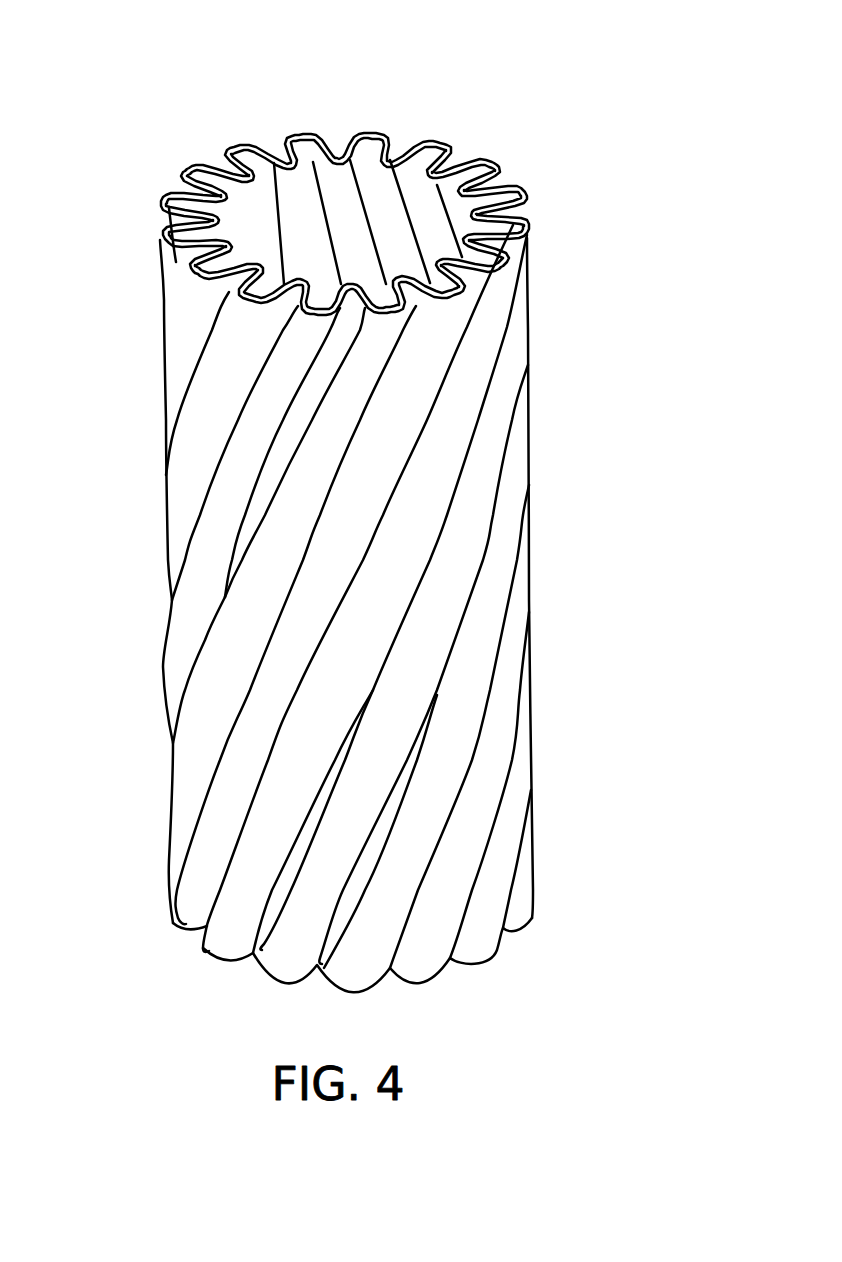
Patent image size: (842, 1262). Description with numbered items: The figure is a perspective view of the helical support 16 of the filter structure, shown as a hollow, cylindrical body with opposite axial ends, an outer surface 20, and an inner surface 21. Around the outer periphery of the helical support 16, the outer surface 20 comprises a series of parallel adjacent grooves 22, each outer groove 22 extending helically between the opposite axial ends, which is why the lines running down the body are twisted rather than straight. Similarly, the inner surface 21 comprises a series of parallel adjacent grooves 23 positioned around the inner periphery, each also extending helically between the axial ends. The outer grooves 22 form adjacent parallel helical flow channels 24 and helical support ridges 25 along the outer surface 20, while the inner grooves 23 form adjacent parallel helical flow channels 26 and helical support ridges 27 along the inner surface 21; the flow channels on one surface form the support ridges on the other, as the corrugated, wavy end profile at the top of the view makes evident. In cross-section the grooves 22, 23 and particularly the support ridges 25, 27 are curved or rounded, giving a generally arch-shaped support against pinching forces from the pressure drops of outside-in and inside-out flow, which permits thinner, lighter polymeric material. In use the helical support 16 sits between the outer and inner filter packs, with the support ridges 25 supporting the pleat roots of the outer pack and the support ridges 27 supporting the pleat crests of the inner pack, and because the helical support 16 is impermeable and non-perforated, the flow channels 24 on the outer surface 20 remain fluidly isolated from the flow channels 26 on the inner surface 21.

The helical support 16 is at (528, 484).
The outer surface 20 is at (244, 382).
The inner surface 21 is at (293, 220).
The outer grooves 22 is at (229, 642).
The inner grooves 23 is at (453, 203).
The outer helical flow channels 24 is at (422, 304).
The outer helical support ridges 25 is at (527, 218).
The inner helical flow channels 26 is at (296, 158).
The inner helical support ridges 27 is at (418, 183).